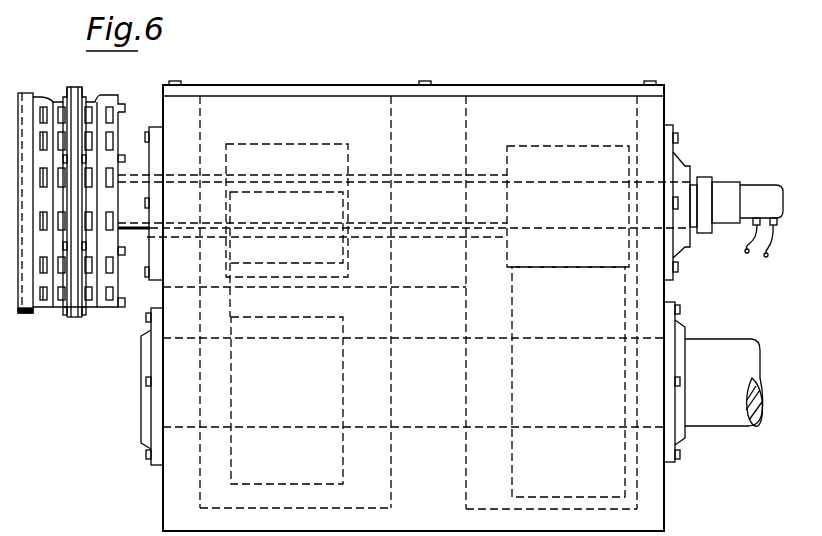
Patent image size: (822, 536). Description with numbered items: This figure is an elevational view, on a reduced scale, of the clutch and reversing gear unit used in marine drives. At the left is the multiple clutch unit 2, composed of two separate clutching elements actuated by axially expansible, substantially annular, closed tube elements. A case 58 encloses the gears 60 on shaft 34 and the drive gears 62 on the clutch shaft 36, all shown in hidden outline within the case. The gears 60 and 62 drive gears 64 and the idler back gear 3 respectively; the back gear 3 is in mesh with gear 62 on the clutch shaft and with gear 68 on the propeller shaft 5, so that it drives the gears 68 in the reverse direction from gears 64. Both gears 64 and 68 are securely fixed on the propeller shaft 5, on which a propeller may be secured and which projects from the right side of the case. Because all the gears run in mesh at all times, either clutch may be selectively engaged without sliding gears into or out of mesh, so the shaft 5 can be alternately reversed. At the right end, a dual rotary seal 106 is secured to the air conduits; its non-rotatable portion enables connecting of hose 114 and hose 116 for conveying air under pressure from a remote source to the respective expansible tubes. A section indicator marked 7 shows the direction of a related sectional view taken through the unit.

The multiple clutch unit 2 is at (113, 70).
The idler back gear 3 is at (316, 318).
The propeller shaft 5 is at (727, 414).
The section line 7- 7 is at (363, 82).
The shaft 34 is at (138, 224).
The clutch shaft 36 is at (136, 175).
The case 58 is at (665, 113).
The gears 60 is at (605, 150).
The drive gear 62 is at (255, 150).
The gears 64 is at (510, 462).
The gears 68 is at (340, 423).
The dual rotary seal 106 is at (756, 183).
The hose 114 is at (744, 250).
The hose 116 is at (768, 259).